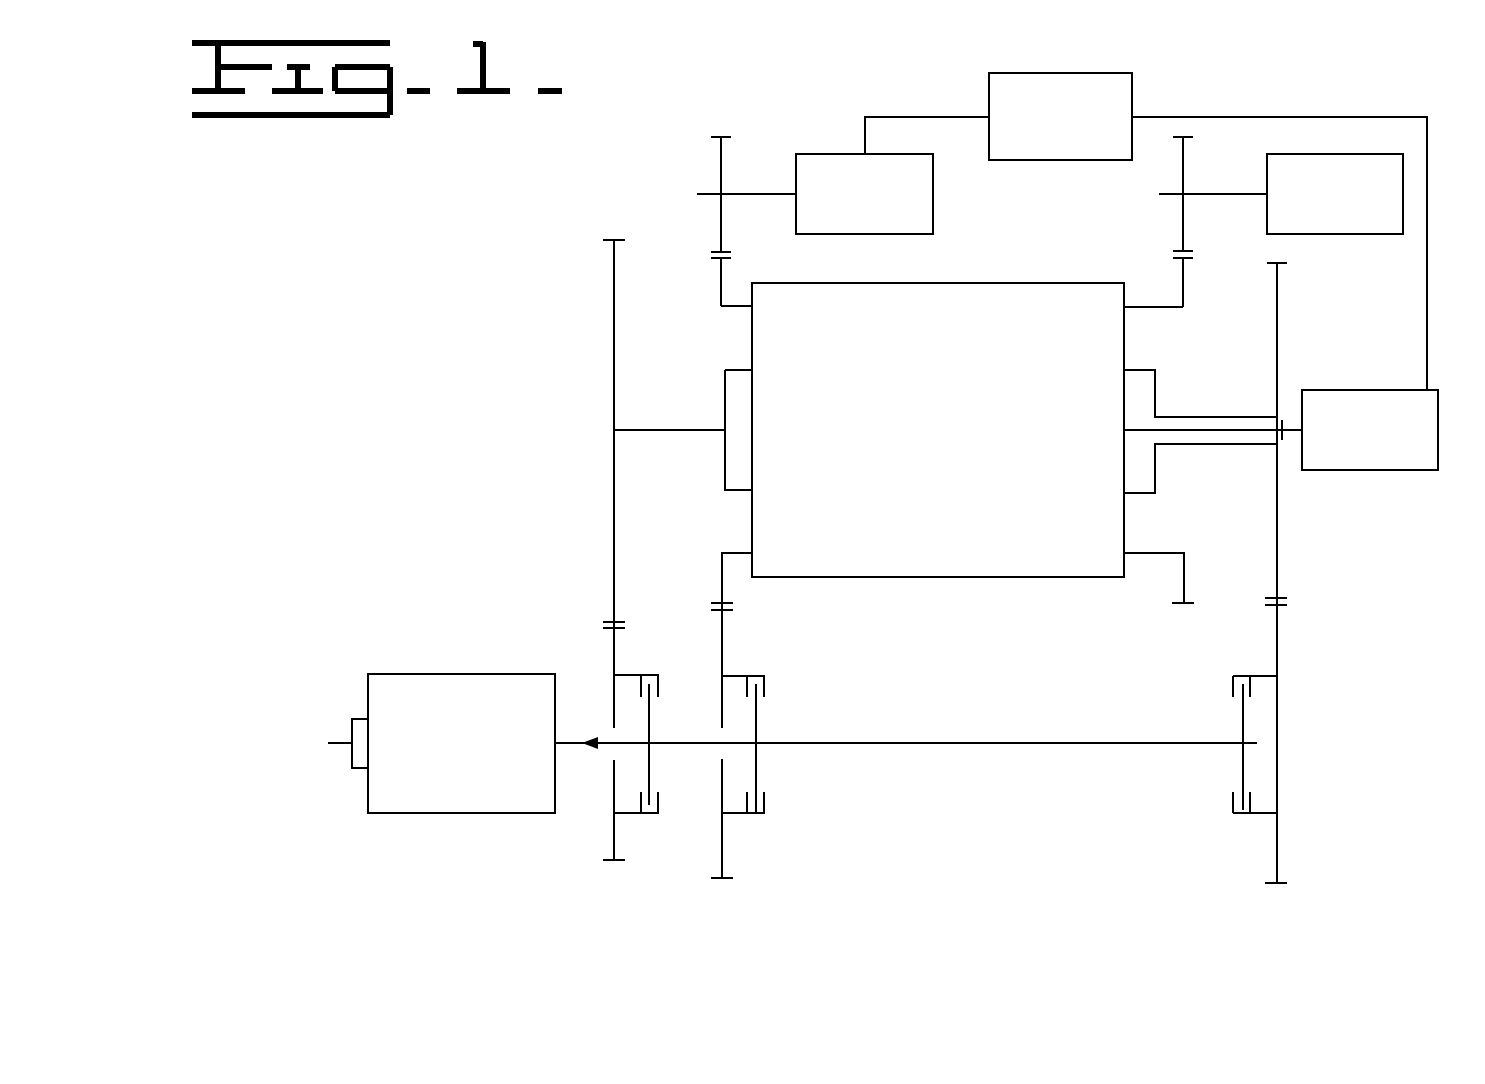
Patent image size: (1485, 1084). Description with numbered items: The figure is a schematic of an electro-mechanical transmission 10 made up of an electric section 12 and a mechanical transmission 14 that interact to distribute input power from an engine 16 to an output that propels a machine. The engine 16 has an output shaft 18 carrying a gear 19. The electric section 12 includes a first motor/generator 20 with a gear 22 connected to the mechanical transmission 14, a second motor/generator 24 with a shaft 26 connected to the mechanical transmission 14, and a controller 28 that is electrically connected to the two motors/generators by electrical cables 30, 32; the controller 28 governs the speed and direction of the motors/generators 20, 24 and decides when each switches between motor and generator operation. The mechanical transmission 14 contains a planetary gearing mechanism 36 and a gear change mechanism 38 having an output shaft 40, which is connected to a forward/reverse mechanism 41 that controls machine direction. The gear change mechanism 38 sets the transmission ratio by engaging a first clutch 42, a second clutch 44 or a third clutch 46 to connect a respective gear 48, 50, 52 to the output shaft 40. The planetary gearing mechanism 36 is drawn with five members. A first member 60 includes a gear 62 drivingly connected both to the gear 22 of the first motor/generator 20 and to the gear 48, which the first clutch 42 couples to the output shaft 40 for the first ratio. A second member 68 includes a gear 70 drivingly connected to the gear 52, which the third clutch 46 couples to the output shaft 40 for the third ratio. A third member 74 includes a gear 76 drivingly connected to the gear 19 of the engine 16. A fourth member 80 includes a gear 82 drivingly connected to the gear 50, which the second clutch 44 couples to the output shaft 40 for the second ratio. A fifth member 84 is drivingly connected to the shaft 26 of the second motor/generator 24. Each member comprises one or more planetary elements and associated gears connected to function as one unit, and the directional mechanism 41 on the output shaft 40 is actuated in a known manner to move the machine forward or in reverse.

The electro-mechanical transmission 10 is at (845, 92).
The electric section 12 is at (1372, 97).
The mechanical transmission 14 is at (527, 428).
The engine 16 is at (1342, 154).
The output shaft 18 is at (1213, 194).
The gear 19 is at (1183, 172).
The first motor/generator 20 is at (808, 153).
The gear 22 is at (721, 162).
The second motor/generator 24 is at (1360, 390).
The shaft 26 is at (1288, 440).
The controller 28 is at (1053, 73).
The electrical cable 30 is at (940, 117).
The electrical cable 32 is at (1228, 117).
The planetary gearing mechanism 36 is at (943, 595).
The gear change mechanism 38 is at (852, 797).
The output shaft 40 is at (947, 743).
The forward/reverse mechanism 41 is at (455, 674).
The first clutch 42 is at (763, 676).
The second clutch 44 is at (1235, 676).
The third clutch 46 is at (660, 675).
The gear 48 is at (723, 857).
The gear 50 is at (1277, 857).
The gear 52 is at (614, 847).
The first member 60 is at (731, 307).
The gear 62 is at (721, 283).
The second member 68 is at (673, 430).
The gear 70 is at (614, 508).
The third member 74 is at (1162, 308).
The gear 76 is at (1184, 262).
The fourth member 80 is at (1225, 417).
The gear 82 is at (1277, 557).
The fifth member 84 is at (1227, 444).